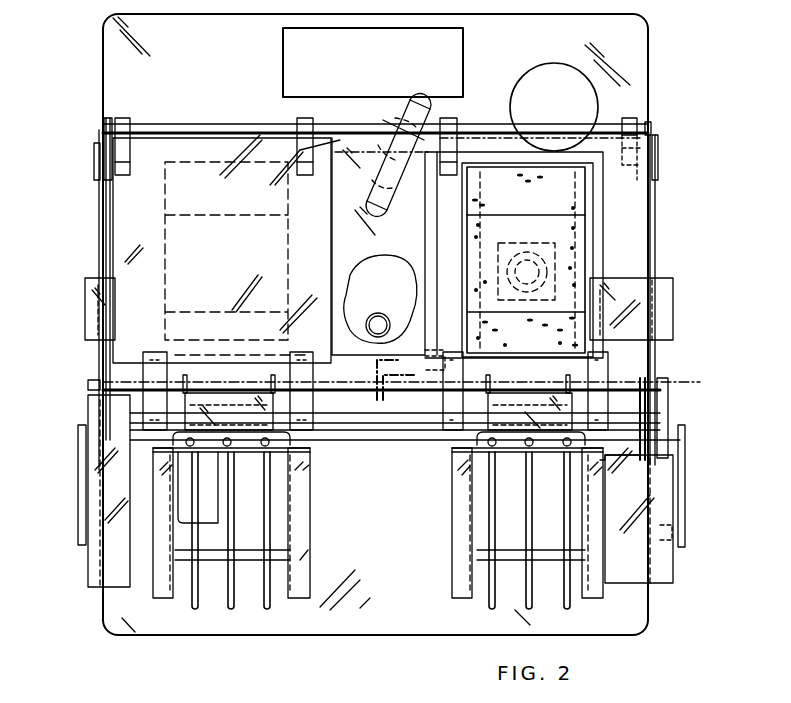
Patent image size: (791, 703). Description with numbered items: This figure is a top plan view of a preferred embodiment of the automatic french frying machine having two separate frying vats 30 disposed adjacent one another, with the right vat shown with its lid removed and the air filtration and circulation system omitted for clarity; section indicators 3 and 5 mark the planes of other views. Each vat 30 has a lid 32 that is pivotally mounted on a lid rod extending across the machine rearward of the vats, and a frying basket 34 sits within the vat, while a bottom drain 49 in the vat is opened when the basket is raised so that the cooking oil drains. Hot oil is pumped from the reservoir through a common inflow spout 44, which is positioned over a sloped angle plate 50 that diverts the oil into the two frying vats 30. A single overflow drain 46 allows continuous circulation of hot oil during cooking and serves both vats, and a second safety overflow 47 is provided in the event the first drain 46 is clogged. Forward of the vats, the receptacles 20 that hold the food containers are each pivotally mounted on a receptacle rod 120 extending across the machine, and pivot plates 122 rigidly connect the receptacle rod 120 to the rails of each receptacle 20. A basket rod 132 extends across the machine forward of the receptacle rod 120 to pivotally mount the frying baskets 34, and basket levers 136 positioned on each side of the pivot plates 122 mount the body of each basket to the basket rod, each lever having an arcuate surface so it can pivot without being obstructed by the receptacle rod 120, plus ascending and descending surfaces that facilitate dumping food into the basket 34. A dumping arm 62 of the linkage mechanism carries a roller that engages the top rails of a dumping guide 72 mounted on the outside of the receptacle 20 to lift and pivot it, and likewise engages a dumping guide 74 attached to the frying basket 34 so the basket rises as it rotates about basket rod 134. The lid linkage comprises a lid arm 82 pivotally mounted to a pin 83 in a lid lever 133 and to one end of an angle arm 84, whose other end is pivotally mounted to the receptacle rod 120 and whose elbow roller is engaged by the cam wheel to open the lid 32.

The receptacle 20 is at (190, 606).
The frying vat 30 is at (160, 242).
The lid 32 is at (110, 230).
The frying basket 34 is at (580, 196).
The inflow spout 44 is at (400, 180).
The overflow drain 46 is at (385, 313).
The safety overflow 47 is at (372, 181).
The bottom drain 49 is at (515, 270).
The sloped angle plate 50 is at (370, 355).
The dumping arm 62 is at (78, 495).
The dumping guide 72 is at (95, 570).
The dumping guide 74 is at (85, 315).
The lid arm 82 is at (93, 147).
The pin 83 is at (107, 145).
The angle arm 84 is at (100, 202).
The receptacle rod 120 is at (628, 380).
The pivot plate 122 is at (258, 403).
The basket rod 132 is at (652, 128).
The lid lever 133 is at (125, 120).
The basket rod 134 is at (637, 426).
The basket lever 136 is at (95, 396).
The section line 3- 3 is at (80, 657).
The section line 5- 5 is at (524, 32).